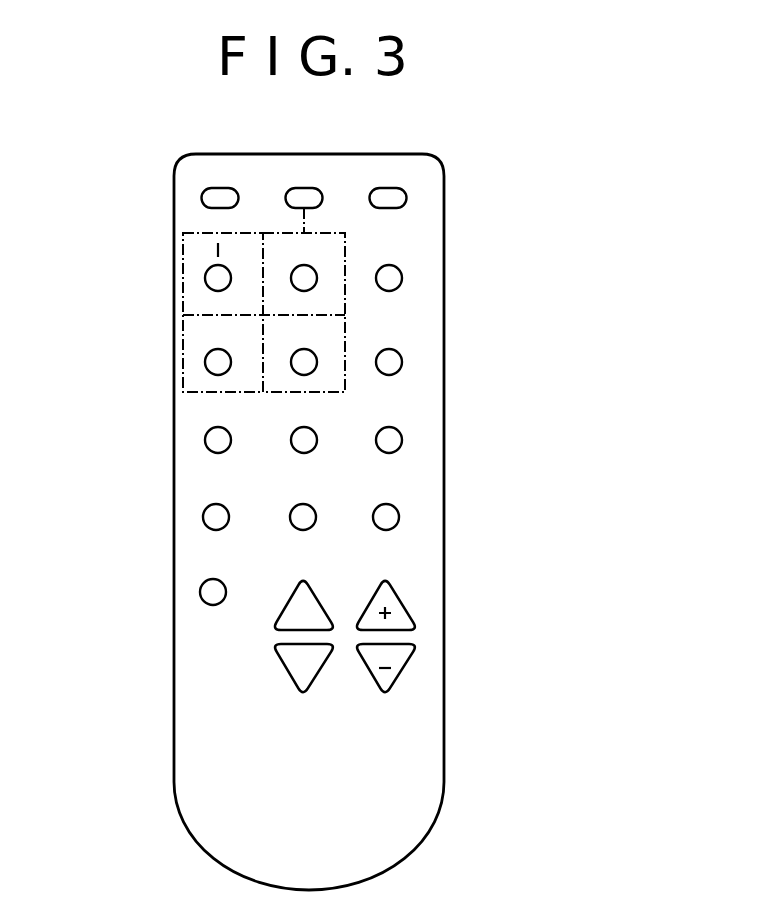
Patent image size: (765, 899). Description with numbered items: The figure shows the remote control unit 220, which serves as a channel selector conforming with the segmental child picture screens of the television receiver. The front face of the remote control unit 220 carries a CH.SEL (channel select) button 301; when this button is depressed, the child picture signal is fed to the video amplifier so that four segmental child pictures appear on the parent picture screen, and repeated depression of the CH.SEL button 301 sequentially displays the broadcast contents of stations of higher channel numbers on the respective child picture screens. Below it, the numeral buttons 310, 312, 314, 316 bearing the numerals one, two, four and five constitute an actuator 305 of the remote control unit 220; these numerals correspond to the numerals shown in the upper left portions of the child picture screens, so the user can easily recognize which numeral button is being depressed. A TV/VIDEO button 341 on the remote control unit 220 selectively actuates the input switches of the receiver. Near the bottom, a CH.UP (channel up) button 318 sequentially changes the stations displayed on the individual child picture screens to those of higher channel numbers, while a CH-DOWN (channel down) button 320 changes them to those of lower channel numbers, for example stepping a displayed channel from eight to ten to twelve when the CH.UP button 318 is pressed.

The remote control unit 220 is at (452, 445).
The actuator 305 is at (150, 206).
The CH.SEL button 301 is at (322, 198).
The numeral button 310 is at (205, 278).
The numeral button 312 is at (317, 277).
The numeral button 314 is at (205, 362).
The numeral button 316 is at (317, 361).
The TV/VIDEO button 341 is at (200, 593).
The CH.UP button 318 is at (273, 629).
The CH-DOWN button 320 is at (292, 676).